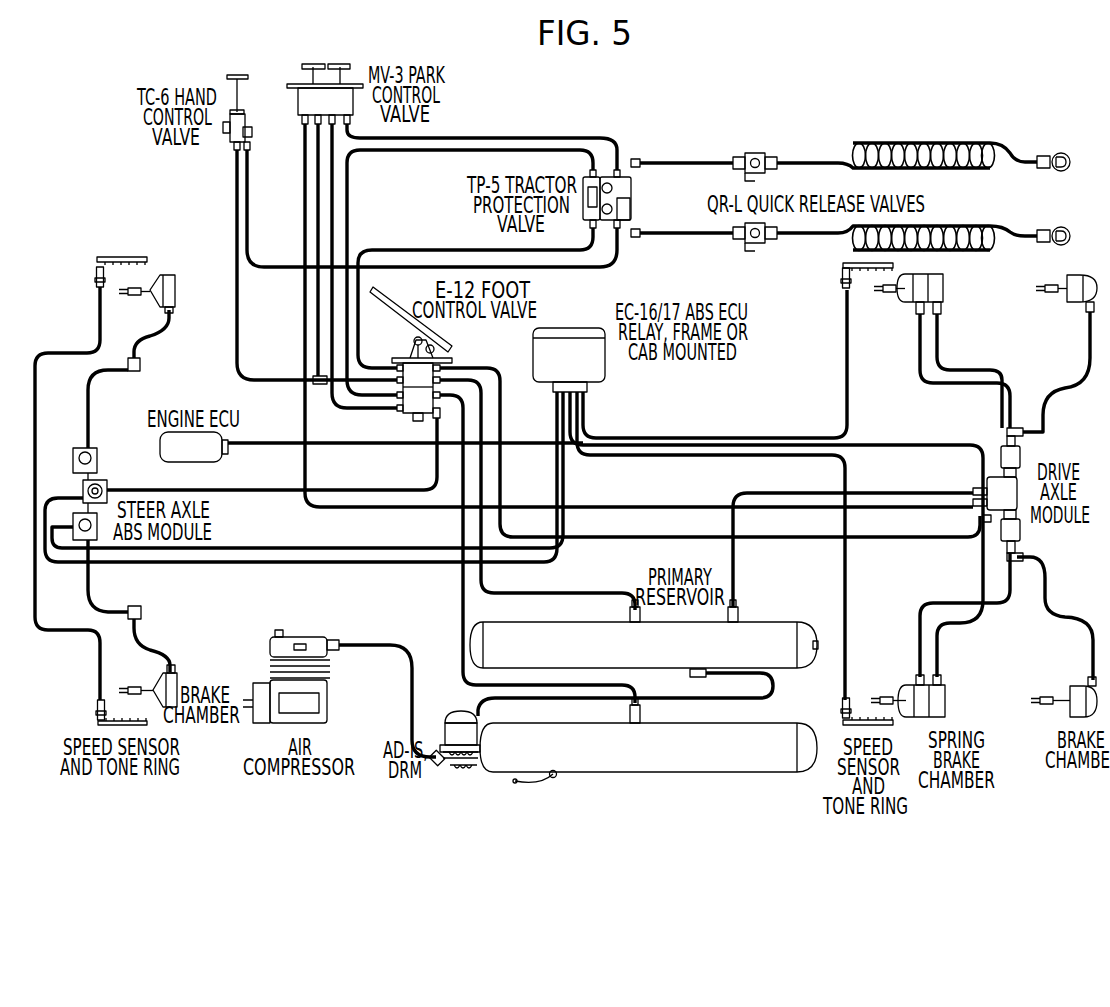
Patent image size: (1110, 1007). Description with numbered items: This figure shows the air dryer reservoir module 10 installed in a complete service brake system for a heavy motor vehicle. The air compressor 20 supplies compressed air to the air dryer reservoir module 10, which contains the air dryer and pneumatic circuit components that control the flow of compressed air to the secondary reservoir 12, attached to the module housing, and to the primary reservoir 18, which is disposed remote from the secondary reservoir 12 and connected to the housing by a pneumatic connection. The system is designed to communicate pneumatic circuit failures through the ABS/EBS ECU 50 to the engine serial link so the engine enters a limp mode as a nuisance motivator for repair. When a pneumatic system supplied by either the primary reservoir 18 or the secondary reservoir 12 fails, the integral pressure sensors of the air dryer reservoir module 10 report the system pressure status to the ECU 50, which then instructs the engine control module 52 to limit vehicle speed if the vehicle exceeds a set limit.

The air dryer reservoir module 10 is at (458, 770).
The secondary air reservoir 12 is at (704, 773).
The primary air reservoir 18 is at (772, 622).
The air compressor 20 is at (270, 646).
The ABS/EBS ECU 50 is at (612, 373).
The engine control module 52 is at (160, 447).